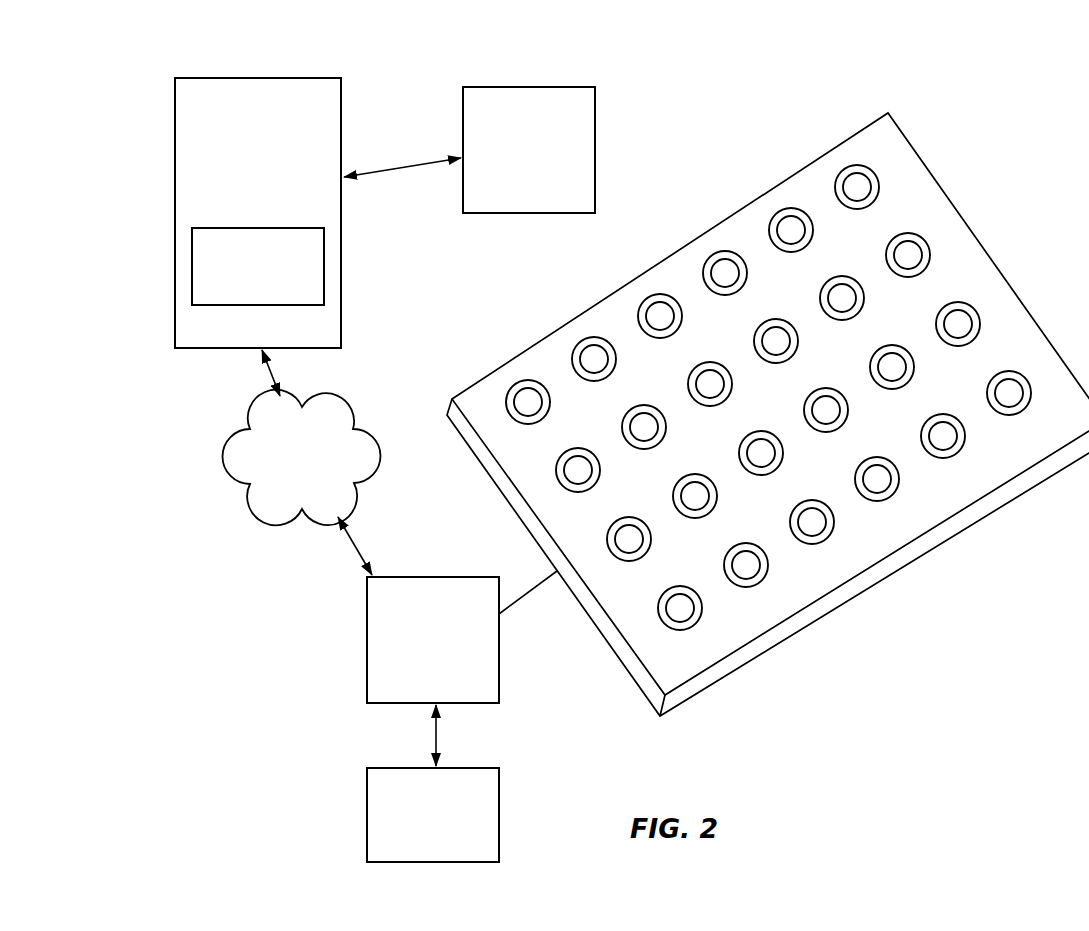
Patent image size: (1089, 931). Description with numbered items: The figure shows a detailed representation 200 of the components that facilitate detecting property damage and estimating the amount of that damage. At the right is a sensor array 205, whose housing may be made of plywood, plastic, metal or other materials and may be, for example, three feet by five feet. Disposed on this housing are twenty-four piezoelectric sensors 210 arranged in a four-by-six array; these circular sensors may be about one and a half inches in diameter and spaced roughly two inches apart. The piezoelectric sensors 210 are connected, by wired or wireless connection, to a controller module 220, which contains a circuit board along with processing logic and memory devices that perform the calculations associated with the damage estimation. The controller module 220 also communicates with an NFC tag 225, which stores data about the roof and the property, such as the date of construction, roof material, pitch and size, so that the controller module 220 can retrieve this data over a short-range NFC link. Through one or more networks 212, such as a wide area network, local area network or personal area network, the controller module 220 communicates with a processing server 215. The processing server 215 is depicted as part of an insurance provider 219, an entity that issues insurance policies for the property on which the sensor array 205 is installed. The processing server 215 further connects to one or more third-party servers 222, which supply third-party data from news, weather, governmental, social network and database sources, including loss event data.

The representation 200 is at (786, 84).
The sensor array 205 is at (660, 263).
The piezoelectric sensors 210 is at (820, 299).
The network 212 is at (330, 398).
The processing server 215 is at (267, 228).
The insurance provider 219 is at (266, 78).
The controller module 220 is at (440, 577).
The third-party server(s) 222 is at (537, 87).
The NFC tag 225 is at (450, 768).